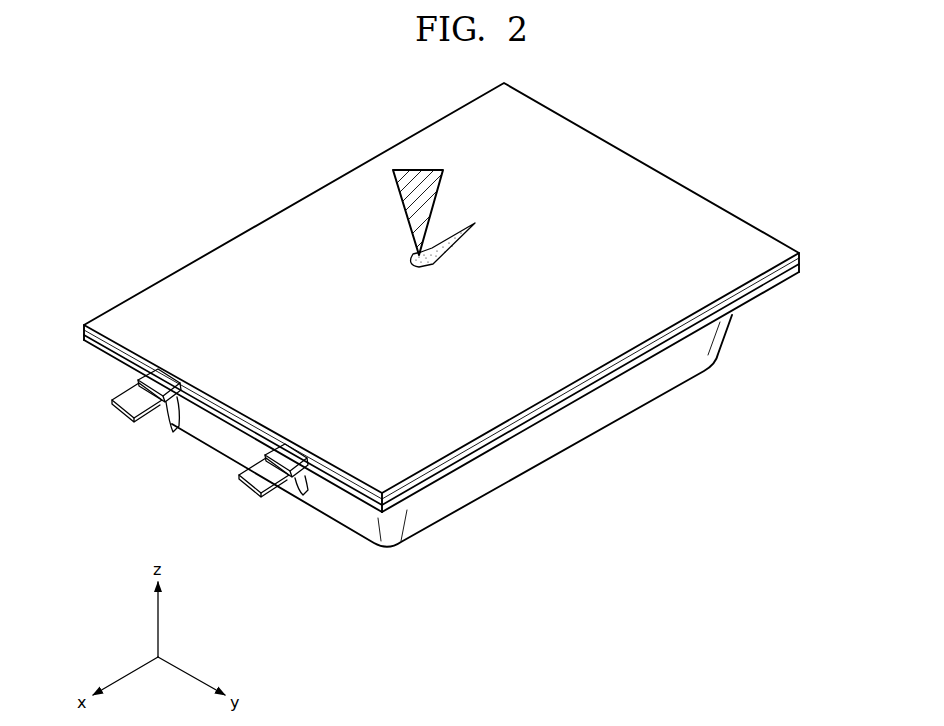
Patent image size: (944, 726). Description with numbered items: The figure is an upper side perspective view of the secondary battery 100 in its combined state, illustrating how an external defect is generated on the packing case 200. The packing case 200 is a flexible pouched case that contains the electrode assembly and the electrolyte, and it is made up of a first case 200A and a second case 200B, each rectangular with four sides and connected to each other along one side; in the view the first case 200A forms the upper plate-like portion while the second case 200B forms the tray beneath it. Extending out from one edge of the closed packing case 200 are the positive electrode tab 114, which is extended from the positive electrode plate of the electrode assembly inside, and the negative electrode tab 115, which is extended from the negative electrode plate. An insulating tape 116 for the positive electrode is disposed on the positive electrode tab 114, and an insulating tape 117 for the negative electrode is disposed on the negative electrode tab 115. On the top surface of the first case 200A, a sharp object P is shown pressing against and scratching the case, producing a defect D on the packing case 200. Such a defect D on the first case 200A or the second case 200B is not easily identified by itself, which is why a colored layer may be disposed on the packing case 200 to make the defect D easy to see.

The secondary battery 100 is at (238, 84).
The packing case 200 is at (813, 132).
The first case 200A is at (627, 202).
The second case 200B is at (680, 376).
The positive electrode tab 114 is at (120, 413).
The negative electrode tab 115 is at (247, 485).
The insulating tape for a positive electrode 116 is at (175, 430).
The insulating tape for a negative electrode 117 is at (303, 477).
The sharp object P is at (418, 170).
The defect D is at (430, 247).